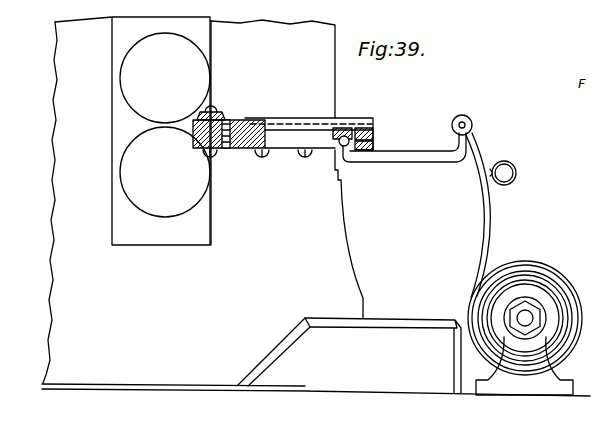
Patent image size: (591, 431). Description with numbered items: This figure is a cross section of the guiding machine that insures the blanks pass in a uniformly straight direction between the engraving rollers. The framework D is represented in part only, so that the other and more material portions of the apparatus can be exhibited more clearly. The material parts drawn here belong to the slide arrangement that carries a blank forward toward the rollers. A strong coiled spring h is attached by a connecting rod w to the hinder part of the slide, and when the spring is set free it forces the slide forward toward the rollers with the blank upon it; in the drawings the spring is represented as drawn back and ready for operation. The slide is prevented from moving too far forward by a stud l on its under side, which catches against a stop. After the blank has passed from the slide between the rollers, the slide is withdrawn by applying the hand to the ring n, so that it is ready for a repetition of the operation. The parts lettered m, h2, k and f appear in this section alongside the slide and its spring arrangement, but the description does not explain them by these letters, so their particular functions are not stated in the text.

The framework D is at (316, 234).
The clamp block m is at (234, 134).
The cap piece h2 is at (222, 110).
The rod k is at (309, 131).
The stud l is at (319, 131).
The end clamp f is at (372, 138).
The connecting rod w is at (404, 148).
The coiled spring h is at (475, 206).
The ring n is at (508, 173).